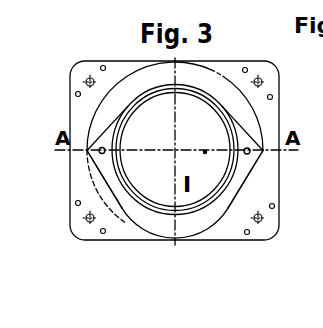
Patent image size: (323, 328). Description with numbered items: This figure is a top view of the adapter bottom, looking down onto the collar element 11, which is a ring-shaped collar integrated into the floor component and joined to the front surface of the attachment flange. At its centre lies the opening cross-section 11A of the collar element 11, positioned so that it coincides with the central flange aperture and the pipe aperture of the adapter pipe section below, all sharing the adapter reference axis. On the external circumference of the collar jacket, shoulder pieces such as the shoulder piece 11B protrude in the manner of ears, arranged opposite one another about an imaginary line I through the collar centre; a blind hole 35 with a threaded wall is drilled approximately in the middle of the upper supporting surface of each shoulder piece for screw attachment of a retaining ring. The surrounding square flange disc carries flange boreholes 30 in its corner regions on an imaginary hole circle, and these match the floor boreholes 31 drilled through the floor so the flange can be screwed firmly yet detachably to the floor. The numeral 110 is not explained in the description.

The collar element 11 is at (206, 214).
The opening cross-section 11A is at (204, 153).
The shoulder piece 11B is at (101, 179).
The right lobe of flange 110 is at (249, 176).
The flange borehole 30 is at (262, 225).
The floor borehole 31 is at (143, 239).
The blind hole 35 is at (258, 152).